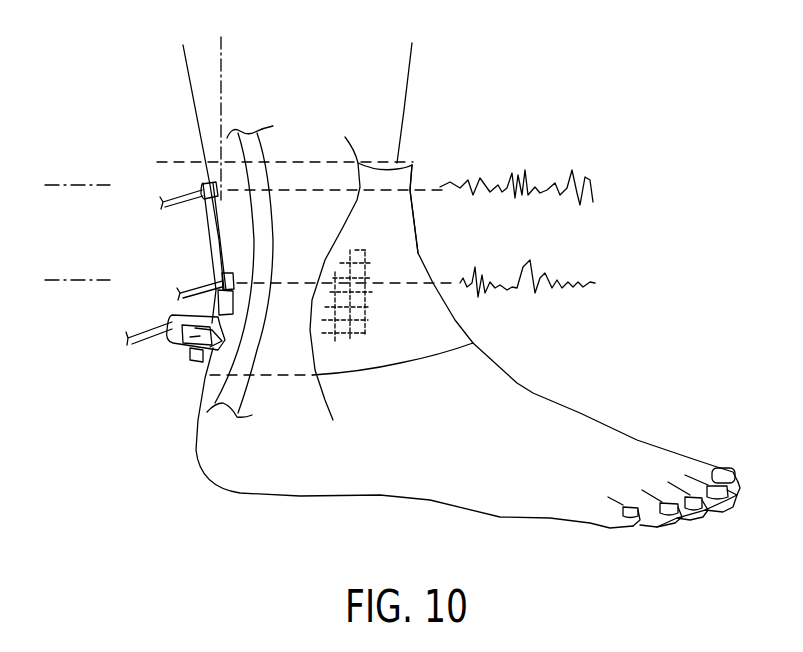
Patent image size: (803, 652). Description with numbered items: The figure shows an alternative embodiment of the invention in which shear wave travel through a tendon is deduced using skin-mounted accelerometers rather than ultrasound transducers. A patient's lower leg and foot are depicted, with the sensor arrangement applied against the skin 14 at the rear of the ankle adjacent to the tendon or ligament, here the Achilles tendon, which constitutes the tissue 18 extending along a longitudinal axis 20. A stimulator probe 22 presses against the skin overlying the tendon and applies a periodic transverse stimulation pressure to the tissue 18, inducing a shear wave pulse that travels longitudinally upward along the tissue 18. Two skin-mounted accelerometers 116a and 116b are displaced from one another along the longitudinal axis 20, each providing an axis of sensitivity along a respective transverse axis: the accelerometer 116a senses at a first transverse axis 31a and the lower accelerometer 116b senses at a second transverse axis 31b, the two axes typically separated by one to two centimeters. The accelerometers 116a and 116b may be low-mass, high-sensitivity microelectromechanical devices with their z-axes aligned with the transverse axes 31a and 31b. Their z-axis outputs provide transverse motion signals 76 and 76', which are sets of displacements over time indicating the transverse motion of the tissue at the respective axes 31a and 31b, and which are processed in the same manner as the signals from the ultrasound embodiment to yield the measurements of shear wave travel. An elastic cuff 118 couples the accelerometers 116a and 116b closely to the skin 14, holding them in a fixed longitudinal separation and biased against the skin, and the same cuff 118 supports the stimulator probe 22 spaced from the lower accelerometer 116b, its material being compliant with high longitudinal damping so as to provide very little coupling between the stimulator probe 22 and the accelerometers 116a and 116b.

The skin 14 is at (533, 405).
The tissue 18 is at (248, 138).
The longitudinal axis 20 is at (224, 48).
The stimulator probe 22 is at (183, 348).
The first transverse axis 31a is at (83, 280).
The second transverse axis 31b is at (83, 185).
The transverse motion signal 76 is at (568, 169).
The transverse motion signal 76' is at (580, 265).
The skin-mounted accelerometer 116a is at (222, 275).
The skin-mounted accelerometer 116b is at (215, 183).
The elastic cuff 118 is at (418, 253).